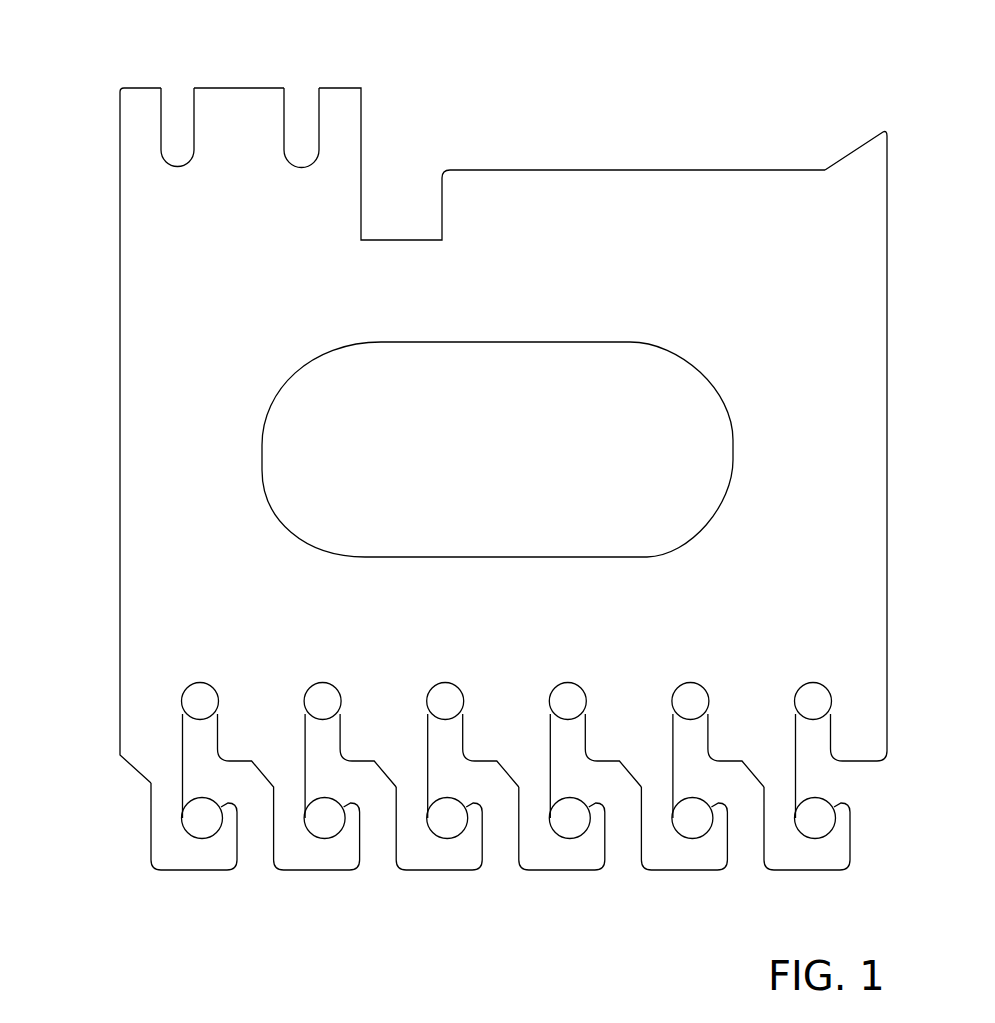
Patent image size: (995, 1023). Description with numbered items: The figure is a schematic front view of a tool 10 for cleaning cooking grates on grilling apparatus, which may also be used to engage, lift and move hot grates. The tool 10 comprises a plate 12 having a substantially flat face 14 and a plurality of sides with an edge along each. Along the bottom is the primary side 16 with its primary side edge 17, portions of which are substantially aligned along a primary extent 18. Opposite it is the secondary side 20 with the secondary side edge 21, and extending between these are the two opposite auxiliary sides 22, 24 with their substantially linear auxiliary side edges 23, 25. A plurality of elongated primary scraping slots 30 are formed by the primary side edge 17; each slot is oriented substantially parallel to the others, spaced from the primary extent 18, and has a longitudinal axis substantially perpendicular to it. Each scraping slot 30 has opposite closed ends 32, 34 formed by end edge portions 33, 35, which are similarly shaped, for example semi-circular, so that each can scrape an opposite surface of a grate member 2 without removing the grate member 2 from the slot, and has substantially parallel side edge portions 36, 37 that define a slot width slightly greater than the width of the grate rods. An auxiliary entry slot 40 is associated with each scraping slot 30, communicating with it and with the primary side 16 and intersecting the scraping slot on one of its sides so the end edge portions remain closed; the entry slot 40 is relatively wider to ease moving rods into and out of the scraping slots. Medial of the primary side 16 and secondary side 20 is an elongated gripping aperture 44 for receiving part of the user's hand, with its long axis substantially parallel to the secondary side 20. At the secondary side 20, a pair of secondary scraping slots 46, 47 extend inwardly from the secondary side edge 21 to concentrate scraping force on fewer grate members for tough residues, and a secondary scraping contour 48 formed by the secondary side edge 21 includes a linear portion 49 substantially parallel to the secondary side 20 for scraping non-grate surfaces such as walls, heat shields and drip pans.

The tool 10 is at (732, 86).
The plate 12 is at (518, 190).
The face 14 is at (153, 687).
The primary side 16 is at (479, 922).
The primary side edge 17 is at (560, 872).
The primary extent 18 is at (855, 867).
The secondary side 20 is at (456, 132).
The secondary side edge 21 is at (628, 169).
The auxiliary side 22 is at (105, 525).
The auxiliary side edge 23 is at (118, 383).
The auxiliary side 24 is at (905, 535).
The auxiliary side edge 25 is at (887, 385).
The primary scraping slot 30 is at (564, 753).
The end of scraping slot 32 is at (698, 668).
The end edge portion 33 is at (697, 682).
The end of scraping slot 34 is at (694, 856).
The end edge portion 35 is at (706, 836).
The side edge portion 36 is at (673, 746).
The side edge portion 37 is at (709, 733).
The auxiliary entry slot 40 is at (624, 869).
The gripping aperture 44 is at (624, 342).
The secondary scraping slot 46 is at (174, 166).
The secondary scraping slot 47 is at (294, 166).
The secondary scraping contour 48 is at (748, 156).
The linear portion 49 is at (582, 171).
The grate member 2 is at (203, 701).